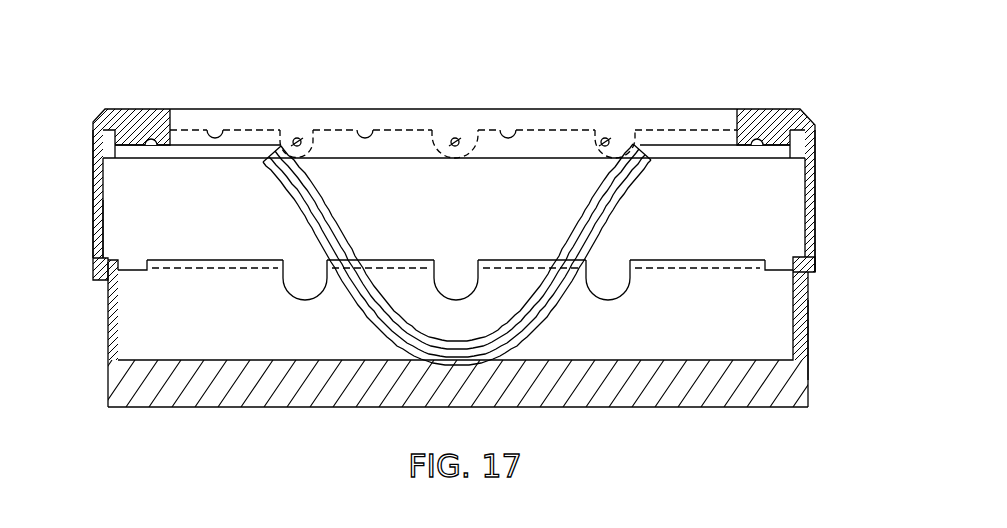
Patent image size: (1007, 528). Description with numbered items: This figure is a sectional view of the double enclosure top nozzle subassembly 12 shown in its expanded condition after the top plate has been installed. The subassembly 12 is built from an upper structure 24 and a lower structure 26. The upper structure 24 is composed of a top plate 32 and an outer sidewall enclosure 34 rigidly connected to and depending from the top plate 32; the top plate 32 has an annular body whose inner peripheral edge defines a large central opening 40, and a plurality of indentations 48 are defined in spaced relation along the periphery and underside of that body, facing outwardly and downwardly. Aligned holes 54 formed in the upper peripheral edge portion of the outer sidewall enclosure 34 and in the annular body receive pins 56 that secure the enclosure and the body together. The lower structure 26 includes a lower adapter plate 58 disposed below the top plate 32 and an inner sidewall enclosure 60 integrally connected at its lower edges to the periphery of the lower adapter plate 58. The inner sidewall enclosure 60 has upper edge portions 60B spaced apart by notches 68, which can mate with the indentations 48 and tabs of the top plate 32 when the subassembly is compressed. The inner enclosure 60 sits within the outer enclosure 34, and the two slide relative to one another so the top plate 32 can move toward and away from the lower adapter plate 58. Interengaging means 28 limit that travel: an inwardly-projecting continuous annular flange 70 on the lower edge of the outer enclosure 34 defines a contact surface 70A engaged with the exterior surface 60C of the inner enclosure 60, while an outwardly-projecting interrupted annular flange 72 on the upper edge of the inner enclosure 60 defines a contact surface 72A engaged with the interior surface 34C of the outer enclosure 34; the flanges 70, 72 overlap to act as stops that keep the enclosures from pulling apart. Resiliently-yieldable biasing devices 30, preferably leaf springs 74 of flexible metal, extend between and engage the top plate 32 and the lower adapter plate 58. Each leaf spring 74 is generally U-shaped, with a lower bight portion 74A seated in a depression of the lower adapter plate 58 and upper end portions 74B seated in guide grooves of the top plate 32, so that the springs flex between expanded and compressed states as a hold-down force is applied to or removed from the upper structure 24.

The top nozzle subassembly 12 is at (675, 92).
The upper structure 24 is at (551, 101).
The lower structure 26 is at (812, 292).
The interengaging means 28 is at (121, 255).
The resiliently-yieldable biasing devices 30 is at (608, 212).
The top plate 32 is at (405, 108).
The outer sidewall enclosure 34 is at (95, 188).
The interior surface of outer sidewall enclosure 34C is at (816, 192).
The central opening 40 is at (170, 133).
The indentations 48 is at (227, 125).
The holes 54 is at (297, 134).
The pins 56 is at (314, 146).
The lower adapter plate 58 is at (670, 409).
The inner sidewall enclosure 60 is at (106, 326).
The upper edge portions 60B is at (262, 258).
The exterior surface of inner sidewall enclosure 60C is at (809, 340).
The notches 68 is at (300, 298).
The inwardly-projecting continuous annular flange 70 is at (93, 275).
The contact surface 70A is at (791, 272).
The outwardly-projecting interrupted annular flange 72 is at (95, 246).
The contact surface 72A is at (810, 262).
The leaf springs 74 is at (391, 330).
The lower bight portion 74A is at (451, 338).
The upper end portions 74B is at (278, 164).